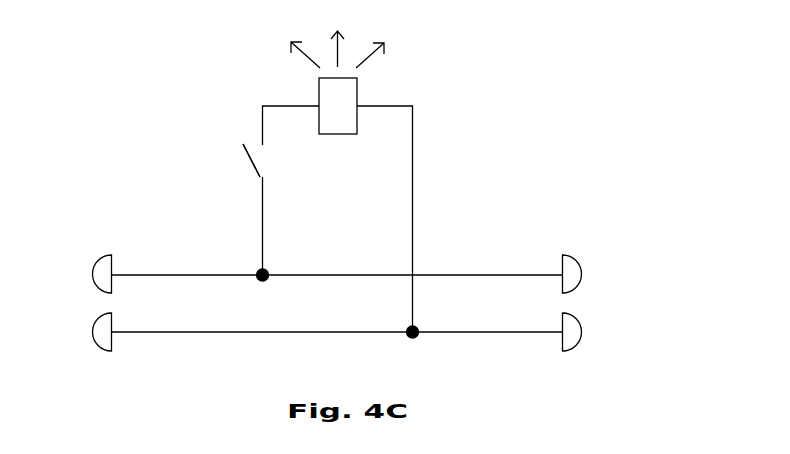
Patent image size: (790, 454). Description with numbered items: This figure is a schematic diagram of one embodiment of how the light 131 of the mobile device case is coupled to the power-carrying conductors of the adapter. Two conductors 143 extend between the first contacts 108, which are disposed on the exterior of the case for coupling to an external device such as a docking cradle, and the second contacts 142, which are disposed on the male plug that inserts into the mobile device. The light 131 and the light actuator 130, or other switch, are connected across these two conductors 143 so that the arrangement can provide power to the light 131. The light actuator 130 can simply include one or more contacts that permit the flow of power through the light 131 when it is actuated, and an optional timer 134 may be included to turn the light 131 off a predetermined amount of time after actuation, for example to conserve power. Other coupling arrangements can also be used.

The first contacts 108 is at (98, 268).
The second contacts 142 is at (569, 257).
The conductors 143 is at (465, 273).
The light actuator 130 is at (260, 177).
The timer 134 is at (251, 160).
The light 131 is at (358, 87).